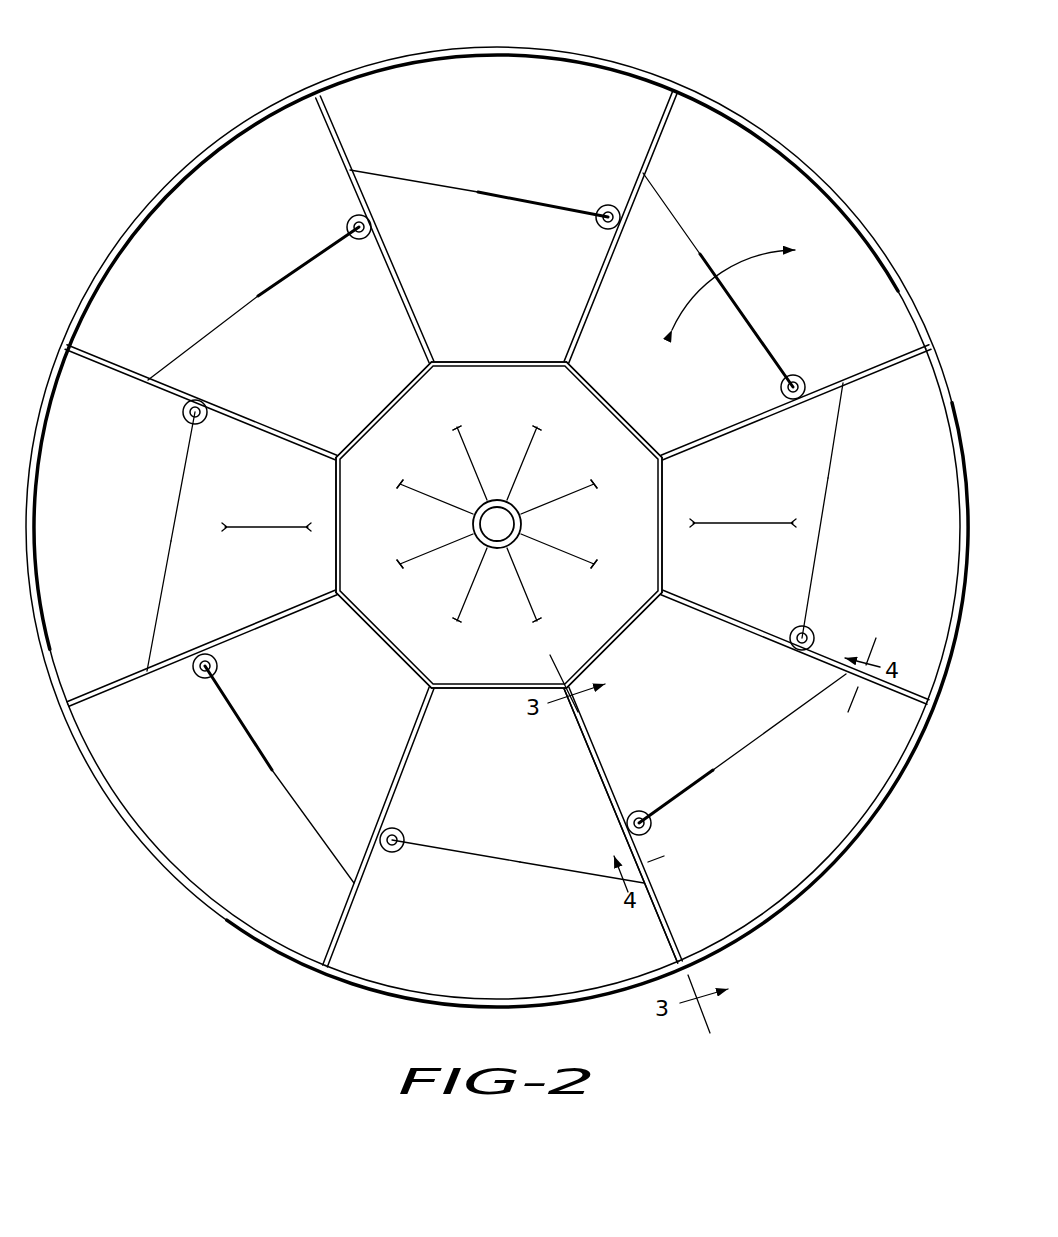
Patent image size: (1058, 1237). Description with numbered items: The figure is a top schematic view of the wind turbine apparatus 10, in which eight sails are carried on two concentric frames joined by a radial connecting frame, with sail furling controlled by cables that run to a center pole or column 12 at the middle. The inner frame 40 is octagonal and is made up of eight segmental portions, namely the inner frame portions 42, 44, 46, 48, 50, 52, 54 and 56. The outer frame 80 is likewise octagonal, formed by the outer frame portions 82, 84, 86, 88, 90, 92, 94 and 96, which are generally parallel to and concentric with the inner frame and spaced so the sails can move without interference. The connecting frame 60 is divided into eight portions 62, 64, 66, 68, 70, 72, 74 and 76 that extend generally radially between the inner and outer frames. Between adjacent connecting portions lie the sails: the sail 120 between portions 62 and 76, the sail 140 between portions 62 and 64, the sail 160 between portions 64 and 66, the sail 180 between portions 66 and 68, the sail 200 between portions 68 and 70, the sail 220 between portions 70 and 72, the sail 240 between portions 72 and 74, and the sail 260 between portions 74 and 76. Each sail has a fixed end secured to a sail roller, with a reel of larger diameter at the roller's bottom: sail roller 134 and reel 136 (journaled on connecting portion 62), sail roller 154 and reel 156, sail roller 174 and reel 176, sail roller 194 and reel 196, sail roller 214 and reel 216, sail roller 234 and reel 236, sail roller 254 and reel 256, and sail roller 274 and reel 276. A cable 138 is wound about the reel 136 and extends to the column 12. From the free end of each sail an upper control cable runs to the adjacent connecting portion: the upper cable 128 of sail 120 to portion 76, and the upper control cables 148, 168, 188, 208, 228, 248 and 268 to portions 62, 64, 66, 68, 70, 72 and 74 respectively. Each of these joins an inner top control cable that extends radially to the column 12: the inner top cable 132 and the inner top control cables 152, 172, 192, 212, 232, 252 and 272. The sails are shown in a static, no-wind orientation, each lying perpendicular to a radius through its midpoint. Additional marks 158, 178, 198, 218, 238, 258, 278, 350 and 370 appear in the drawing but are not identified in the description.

The wind turbine apparatus 10 is at (718, 62).
The center pole or column 12 is at (517, 505).
The inner frame 40 is at (456, 672).
The inner frame portion 42 is at (606, 650).
The inner frame portion 44 is at (535, 689).
The inner frame portion 46 is at (405, 655).
The inner frame portion 48 is at (341, 540).
The inner frame portion 50 is at (408, 400).
The inner frame portion 52 is at (500, 366).
The inner frame portion 54 is at (612, 412).
The inner frame portion 56 is at (655, 505).
The connecting frame 60 is at (588, 773).
The connecting frame portion 62 is at (591, 740).
The connecting frame portion 64 is at (407, 760).
The connecting frame portion 66 is at (282, 618).
The connecting frame portion 68 is at (307, 443).
The connecting frame portion 70 is at (408, 300).
The connecting frame portion 72 is at (585, 326).
The connecting frame portion 74 is at (712, 434).
The connecting frame portion 76 is at (738, 621).
The outer frame 80 is at (828, 891).
The outer frame portion 82 is at (803, 884).
The outer frame portion 84 is at (540, 1000).
The outer frame portion 86 is at (220, 905).
The outer frame portion 88 is at (42, 612).
The outer frame portion 90 is at (160, 208).
The outer frame portion 92 is at (521, 56).
The outer frame portion 94 is at (830, 200).
The outer frame portion 96 is at (958, 470).
The sail 120 is at (712, 770).
The upper cable or line 128 is at (795, 711).
The inner top cable or line 132 is at (563, 550).
The sail roller 134 is at (645, 812).
The reel 136 is at (650, 834).
The cable 138 is at (548, 658).
The sail 140 is at (500, 858).
The upper control cable 148 is at (578, 872).
The inner top control cable 152 is at (524, 588).
The sail roller 154 is at (402, 831).
The reel 156 is at (389, 852).
The rod end 158 is at (440, 680).
The sail 160 is at (268, 756).
The upper control cable 168 is at (320, 833).
The inner top control cable 172 is at (474, 582).
The sail roller 174 is at (217, 667).
The reel 176 is at (199, 677).
The rod end 178 is at (368, 578).
The sail 180 is at (178, 505).
The upper control cable 188 is at (156, 620).
The inner top control cable 192 is at (415, 570).
The sail roller 194 is at (200, 424).
The reel 196 is at (184, 416).
The rod end 198 is at (378, 468).
The sail 200 is at (280, 284).
The upper control cable 208 is at (215, 331).
The inner top control cable 212 is at (442, 498).
The sail roller 214 is at (357, 240).
The reel 216 is at (348, 222).
The rod end 218 is at (440, 372).
The sail 220 is at (510, 199).
The upper control cable 228 is at (437, 186).
The inner top control cable 232 is at (463, 445).
The sail roller 234 is at (600, 227).
The reel 236 is at (614, 207).
The rod end 238 is at (538, 436).
The sail 240 is at (760, 340).
The upper control cable 248 is at (704, 250).
The inner top control cable 252 is at (535, 440).
The sail roller 254 is at (781, 387).
The reel 256 is at (801, 377).
The rod end 258 is at (597, 480).
The sail 260 is at (819, 545).
The upper control cable 268 is at (829, 478).
The inner top control cable 272 is at (563, 494).
The sail roller 274 is at (801, 626).
The reel 276 is at (814, 638).
The rod end 278 is at (630, 578).
The spacing dimension 350 is at (748, 522).
The spacing dimension 370 is at (300, 525).